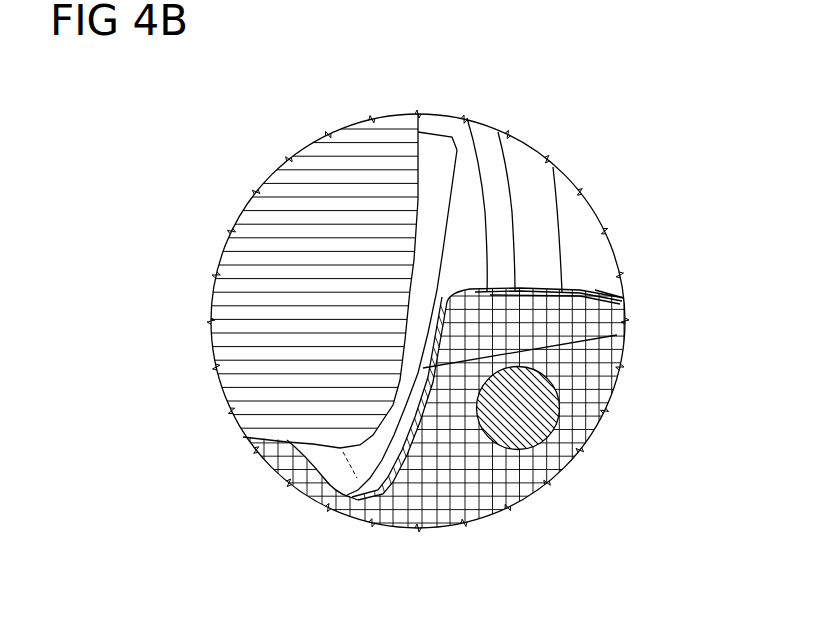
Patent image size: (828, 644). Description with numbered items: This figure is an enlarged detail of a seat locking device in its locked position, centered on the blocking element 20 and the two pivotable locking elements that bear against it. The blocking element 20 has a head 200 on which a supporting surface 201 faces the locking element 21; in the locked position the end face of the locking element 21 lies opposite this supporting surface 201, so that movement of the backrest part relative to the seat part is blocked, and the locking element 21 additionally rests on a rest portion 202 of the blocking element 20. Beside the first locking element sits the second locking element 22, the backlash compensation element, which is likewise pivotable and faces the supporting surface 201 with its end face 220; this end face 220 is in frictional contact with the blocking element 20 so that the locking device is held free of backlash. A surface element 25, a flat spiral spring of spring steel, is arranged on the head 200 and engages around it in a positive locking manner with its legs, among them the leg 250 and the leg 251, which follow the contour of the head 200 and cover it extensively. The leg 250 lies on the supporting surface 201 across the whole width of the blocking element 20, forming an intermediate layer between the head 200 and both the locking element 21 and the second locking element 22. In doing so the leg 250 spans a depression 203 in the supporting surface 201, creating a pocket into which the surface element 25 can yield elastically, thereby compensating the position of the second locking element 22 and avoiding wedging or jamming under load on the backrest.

The blocking element 20 is at (510, 490).
The head 200 is at (613, 393).
The supporting surface 201 is at (617, 335).
The rest portion 202 is at (278, 462).
The depression 203 is at (407, 420).
The locking element 21 is at (362, 158).
The second locking element 22 is at (443, 180).
The end face 220 is at (458, 220).
The surface element 25 is at (583, 288).
The leg 250 is at (325, 496).
The leg 251 is at (610, 297).